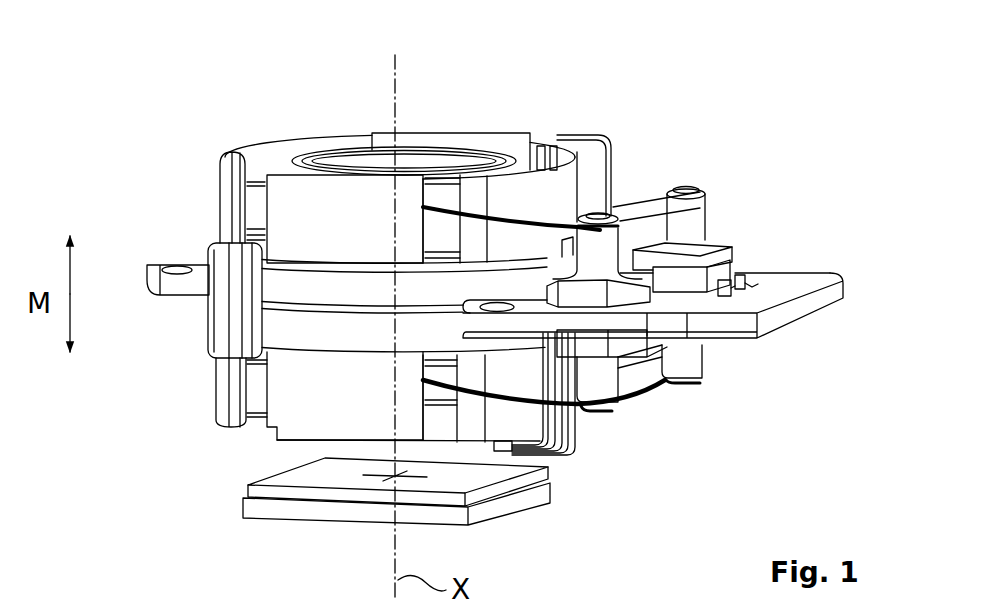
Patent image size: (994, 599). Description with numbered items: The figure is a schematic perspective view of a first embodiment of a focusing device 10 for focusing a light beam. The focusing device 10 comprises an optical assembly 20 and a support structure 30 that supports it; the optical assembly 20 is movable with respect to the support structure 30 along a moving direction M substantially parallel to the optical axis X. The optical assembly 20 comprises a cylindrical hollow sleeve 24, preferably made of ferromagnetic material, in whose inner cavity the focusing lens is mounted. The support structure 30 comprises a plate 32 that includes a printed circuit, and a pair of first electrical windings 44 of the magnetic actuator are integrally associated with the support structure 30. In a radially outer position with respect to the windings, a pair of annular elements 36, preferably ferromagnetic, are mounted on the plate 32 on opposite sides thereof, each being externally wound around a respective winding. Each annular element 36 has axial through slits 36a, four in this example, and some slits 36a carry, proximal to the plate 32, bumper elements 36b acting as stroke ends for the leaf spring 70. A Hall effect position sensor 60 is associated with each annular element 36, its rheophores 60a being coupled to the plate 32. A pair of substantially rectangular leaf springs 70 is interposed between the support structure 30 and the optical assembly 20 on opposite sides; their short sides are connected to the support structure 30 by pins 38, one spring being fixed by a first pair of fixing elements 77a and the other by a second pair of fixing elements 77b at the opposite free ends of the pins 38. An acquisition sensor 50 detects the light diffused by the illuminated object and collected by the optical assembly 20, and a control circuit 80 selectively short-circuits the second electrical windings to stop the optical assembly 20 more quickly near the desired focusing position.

The focusing device 10 is at (190, 193).
The optical assembly 20 is at (348, 140).
The sleeve 24 is at (493, 158).
The support structure 30 is at (776, 256).
The plate 32 is at (789, 308).
The annular element 36 is at (298, 212).
The axial through slit 36a is at (263, 208).
The bumper element 36b is at (233, 242).
The pin 38 is at (690, 361).
The first electrical winding 44 is at (475, 535).
The acquisition sensor 50 is at (258, 527).
The position sensor 60 is at (544, 142).
The rheophore 60a is at (612, 163).
The leaf spring 70 is at (689, 186).
The first pair of fixing elements 77a is at (612, 213).
The second pair of fixing elements 77b is at (590, 416).
The control circuit 80 is at (702, 262).